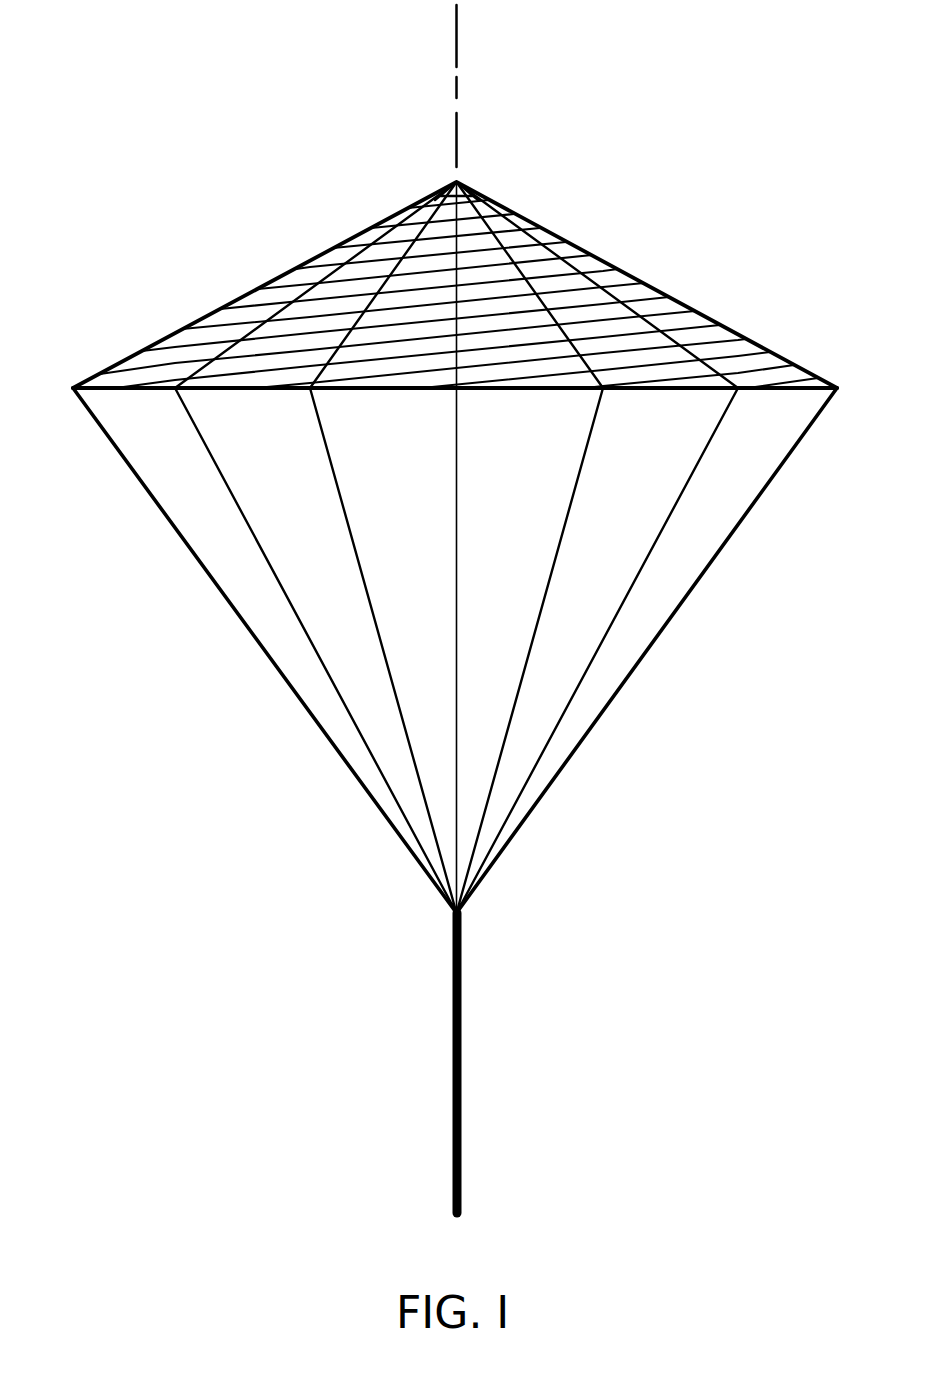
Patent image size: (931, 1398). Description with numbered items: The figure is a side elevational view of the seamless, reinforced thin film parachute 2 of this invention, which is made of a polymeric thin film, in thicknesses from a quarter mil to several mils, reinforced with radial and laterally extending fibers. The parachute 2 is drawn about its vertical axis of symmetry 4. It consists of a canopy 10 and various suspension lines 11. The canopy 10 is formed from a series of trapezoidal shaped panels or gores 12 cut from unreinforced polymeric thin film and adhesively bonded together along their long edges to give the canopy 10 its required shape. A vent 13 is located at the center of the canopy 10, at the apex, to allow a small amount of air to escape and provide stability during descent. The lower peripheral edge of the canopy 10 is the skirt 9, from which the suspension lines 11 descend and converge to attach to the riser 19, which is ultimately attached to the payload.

The parachute 2 is at (456, 609).
The vertical axis of symmetry 4 is at (455, 40).
The skirt 9 is at (795, 388).
The canopy 10 is at (700, 313).
The suspension lines 11 is at (698, 580).
The gores 12 is at (673, 362).
The vent 13 is at (471, 183).
The riser 19 is at (461, 1057).